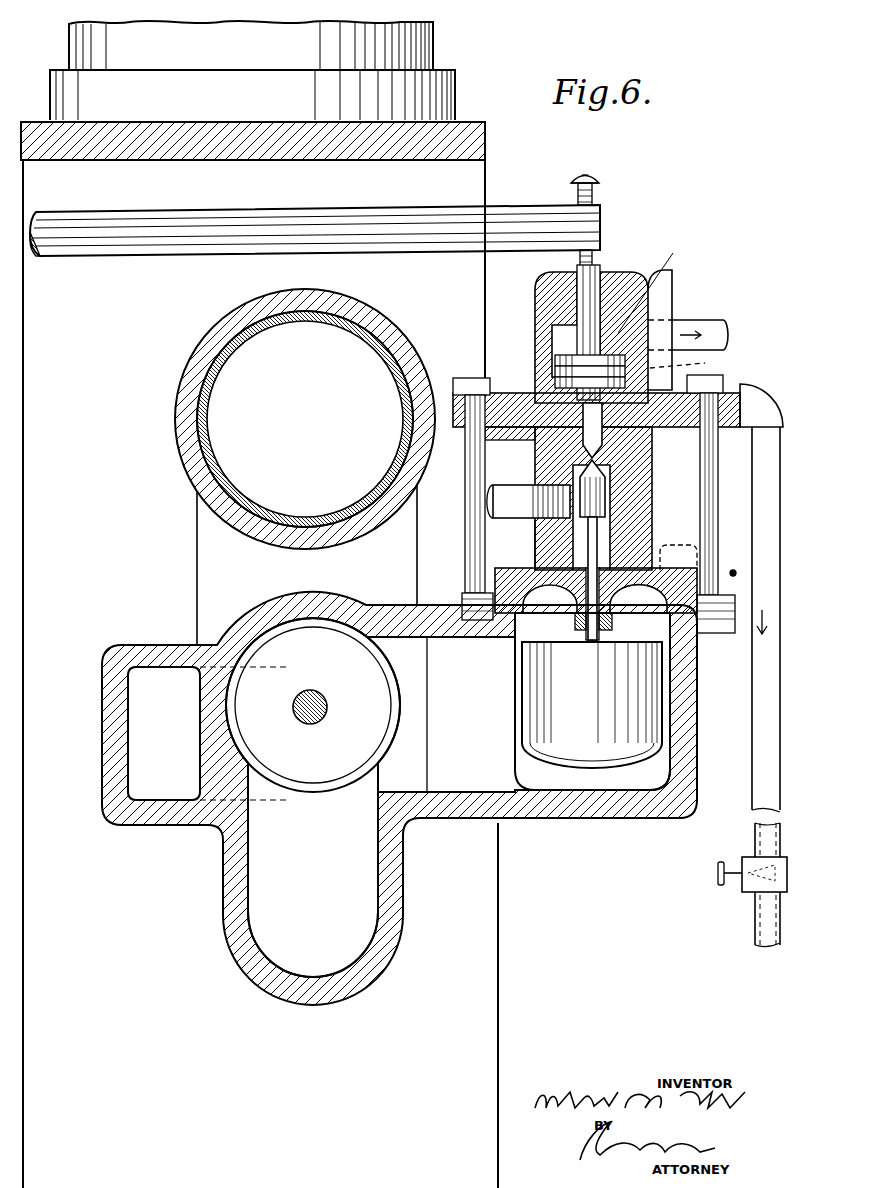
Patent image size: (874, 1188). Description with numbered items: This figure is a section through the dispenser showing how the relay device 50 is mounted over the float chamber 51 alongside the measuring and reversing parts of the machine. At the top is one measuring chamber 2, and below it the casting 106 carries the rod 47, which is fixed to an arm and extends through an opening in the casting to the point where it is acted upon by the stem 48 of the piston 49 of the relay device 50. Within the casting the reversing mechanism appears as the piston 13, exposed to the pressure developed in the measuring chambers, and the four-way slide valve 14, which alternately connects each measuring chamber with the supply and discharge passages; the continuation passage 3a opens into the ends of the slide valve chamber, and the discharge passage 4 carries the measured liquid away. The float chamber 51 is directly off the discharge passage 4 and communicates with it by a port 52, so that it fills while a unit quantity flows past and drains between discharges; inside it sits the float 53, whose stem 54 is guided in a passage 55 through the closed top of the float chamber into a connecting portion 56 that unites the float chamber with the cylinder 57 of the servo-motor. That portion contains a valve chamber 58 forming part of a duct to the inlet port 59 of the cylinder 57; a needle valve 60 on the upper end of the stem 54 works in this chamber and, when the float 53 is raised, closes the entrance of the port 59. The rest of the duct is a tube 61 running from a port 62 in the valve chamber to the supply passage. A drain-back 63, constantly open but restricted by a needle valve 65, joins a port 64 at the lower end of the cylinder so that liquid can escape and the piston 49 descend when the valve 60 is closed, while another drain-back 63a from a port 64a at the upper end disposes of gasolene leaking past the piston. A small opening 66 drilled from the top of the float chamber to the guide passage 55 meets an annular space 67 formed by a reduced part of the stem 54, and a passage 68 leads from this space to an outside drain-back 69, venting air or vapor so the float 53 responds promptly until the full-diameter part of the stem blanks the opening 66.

The measuring chamber 2 is at (435, 48).
The casting 106 is at (487, 147).
The rod 47 is at (116, 258).
The piston 13 is at (305, 419).
The four-way slide valve 14 is at (313, 705).
The continuation passage 3a is at (164, 733).
The discharge passage 4 is at (358, 838).
The stem 48 is at (597, 285).
The piston 49 is at (555, 373).
The relay device 50 is at (673, 300).
The float chamber 51 is at (637, 790).
The port 52 is at (428, 762).
The cup 53 is at (592, 705).
The stem 54 is at (592, 641).
The guide passage 55 is at (575, 621).
The connecting portion 56 is at (643, 513).
The cylinder 57 is at (543, 320).
The valve chamber 58 is at (596, 581).
The inlet port 59 is at (597, 440).
The needle valve 60 is at (604, 488).
The tube 61 is at (511, 518).
The port 62 is at (545, 542).
The drain-back 63 is at (752, 690).
The drain-back 63a is at (728, 328).
The port 64 is at (694, 362).
The port 64a is at (667, 284).
The needle valve 65 is at (742, 886).
The small opening 66 is at (612, 606).
The annular space 67 is at (577, 576).
The passage 68 is at (673, 563).
The drain-back 69 is at (725, 567).